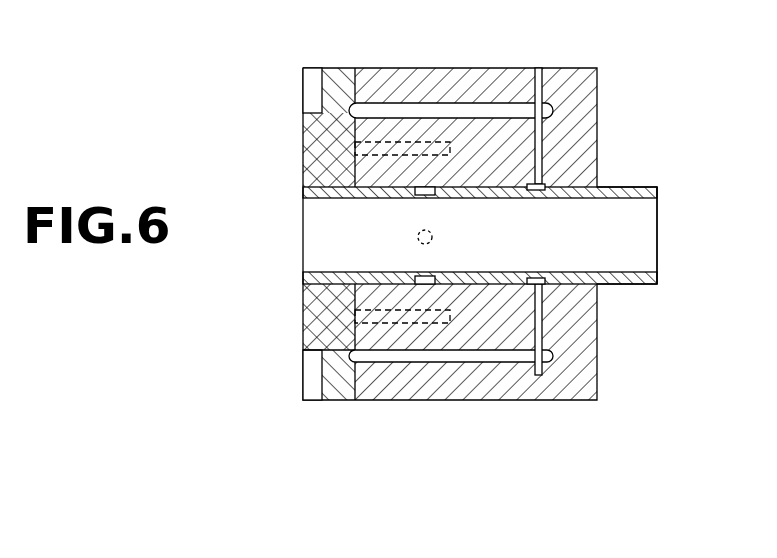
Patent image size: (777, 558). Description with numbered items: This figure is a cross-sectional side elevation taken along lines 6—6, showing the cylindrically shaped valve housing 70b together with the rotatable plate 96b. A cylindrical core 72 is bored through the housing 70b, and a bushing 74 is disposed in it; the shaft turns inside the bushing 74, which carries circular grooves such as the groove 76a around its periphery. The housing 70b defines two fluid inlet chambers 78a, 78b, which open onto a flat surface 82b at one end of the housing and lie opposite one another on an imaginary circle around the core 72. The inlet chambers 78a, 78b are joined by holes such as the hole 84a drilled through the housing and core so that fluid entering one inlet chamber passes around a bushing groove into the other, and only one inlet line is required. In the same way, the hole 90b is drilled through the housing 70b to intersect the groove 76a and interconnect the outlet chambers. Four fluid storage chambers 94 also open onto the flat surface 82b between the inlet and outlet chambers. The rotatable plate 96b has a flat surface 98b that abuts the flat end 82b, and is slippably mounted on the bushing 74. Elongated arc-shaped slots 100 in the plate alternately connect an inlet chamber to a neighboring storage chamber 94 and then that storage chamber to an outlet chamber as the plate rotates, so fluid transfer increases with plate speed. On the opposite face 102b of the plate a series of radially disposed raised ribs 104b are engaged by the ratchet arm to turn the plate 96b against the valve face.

The section line 6 is at (78, 10).
The valve housing 70b is at (495, 68).
The cylindrical core 72 is at (505, 198).
The bushing 74 is at (625, 187).
The groove 76a is at (418, 184).
The fluid inlet chamber 78a is at (416, 103).
The fluid inlet chamber 78b is at (420, 362).
The flat surface 82b is at (343, 340).
The hole 84a is at (540, 150).
The hole 90b is at (416, 242).
The fluid storage chamber 94 is at (355, 148).
The rotatable plate 96b is at (338, 68).
The flat surface 98b is at (355, 75).
The arc shaped slot 100 is at (355, 122).
The face 102b is at (312, 96).
The raised rib 104b is at (303, 375).